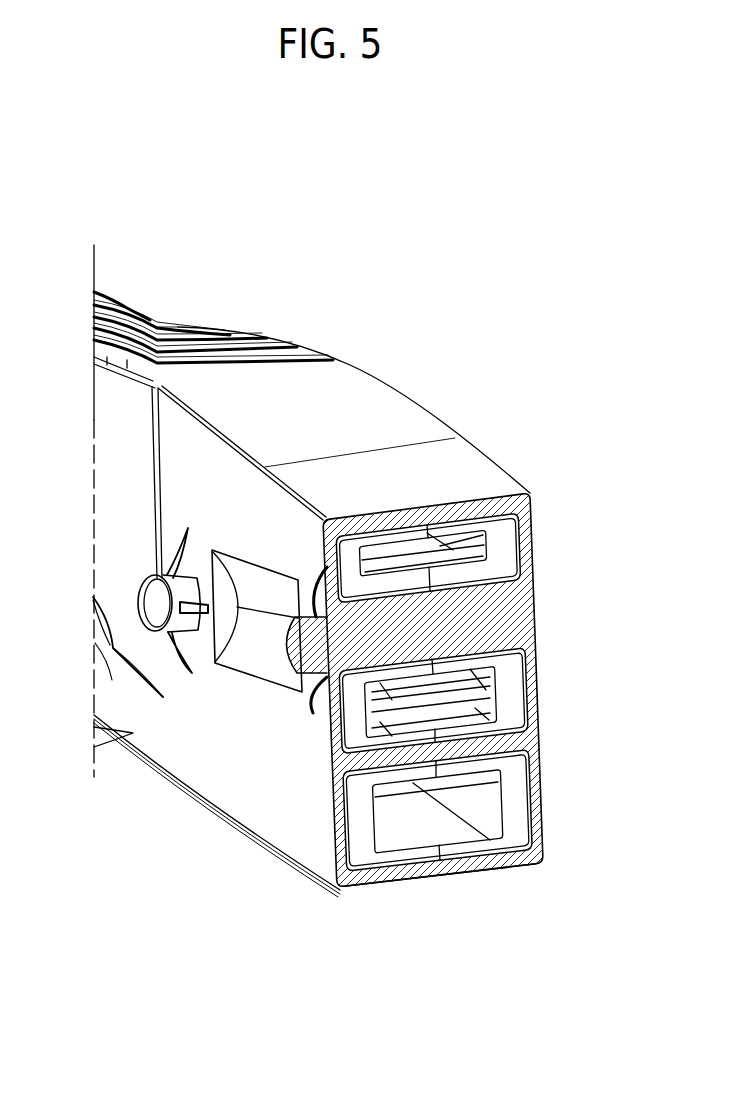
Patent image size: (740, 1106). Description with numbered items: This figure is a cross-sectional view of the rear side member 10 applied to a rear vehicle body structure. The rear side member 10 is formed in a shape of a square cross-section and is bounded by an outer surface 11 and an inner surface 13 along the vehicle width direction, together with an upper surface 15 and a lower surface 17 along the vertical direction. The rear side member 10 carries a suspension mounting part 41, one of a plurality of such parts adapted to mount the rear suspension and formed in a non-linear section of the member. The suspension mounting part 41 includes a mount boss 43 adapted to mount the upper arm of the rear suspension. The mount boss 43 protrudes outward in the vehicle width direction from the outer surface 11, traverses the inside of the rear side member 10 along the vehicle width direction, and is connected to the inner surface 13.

The rear side member 10 is at (316, 223).
The outer surface 11 is at (232, 755).
The inner surface 13 is at (538, 687).
The upper surface 15 is at (395, 413).
The lower surface 17 is at (457, 875).
The suspension mounting part 41 is at (138, 582).
The mount boss 43 is at (307, 647).